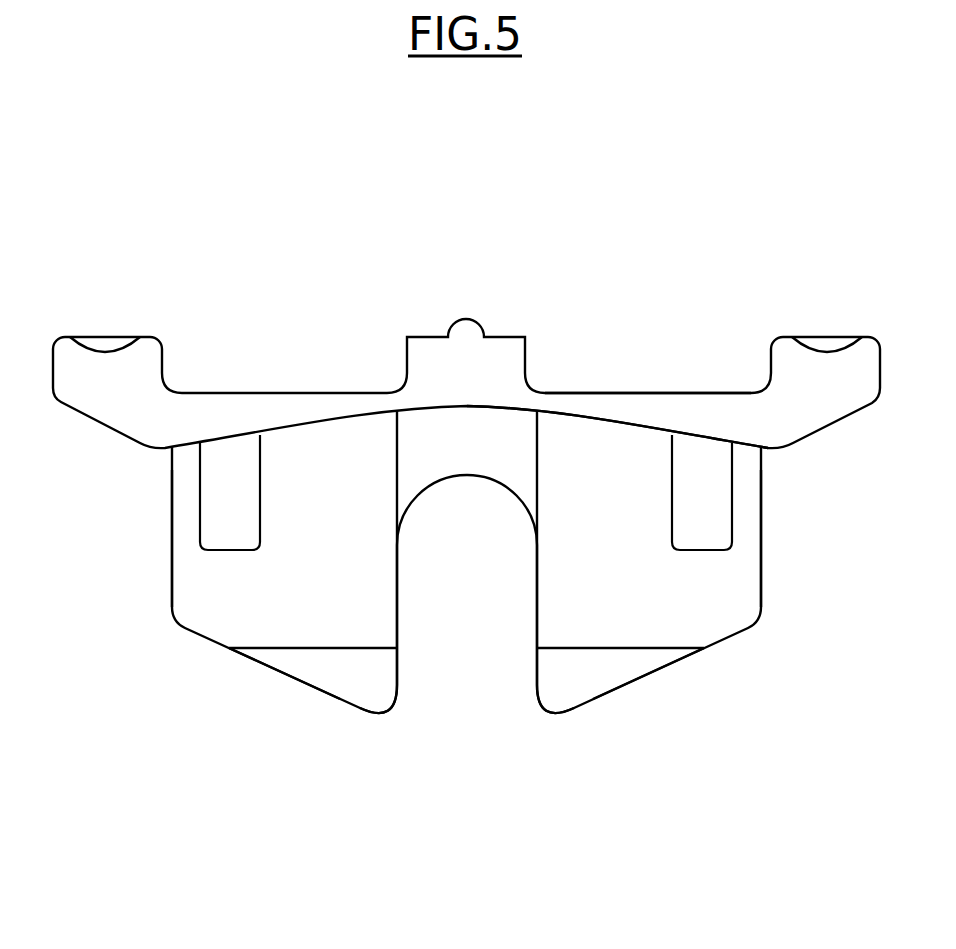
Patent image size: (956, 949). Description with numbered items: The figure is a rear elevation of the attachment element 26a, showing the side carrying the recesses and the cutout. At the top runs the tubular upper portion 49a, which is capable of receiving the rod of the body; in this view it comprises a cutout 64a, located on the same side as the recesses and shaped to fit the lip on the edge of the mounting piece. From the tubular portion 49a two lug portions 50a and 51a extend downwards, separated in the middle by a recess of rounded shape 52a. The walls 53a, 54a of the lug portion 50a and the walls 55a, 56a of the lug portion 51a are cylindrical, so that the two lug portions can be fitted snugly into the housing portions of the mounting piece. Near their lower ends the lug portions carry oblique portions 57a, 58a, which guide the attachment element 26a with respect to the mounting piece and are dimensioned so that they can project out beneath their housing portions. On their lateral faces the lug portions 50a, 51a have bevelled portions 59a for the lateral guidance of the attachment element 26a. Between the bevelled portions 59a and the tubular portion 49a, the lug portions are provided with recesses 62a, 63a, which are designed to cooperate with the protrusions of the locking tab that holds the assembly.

The attachment element 26a is at (211, 336).
The tubular upper portion 49a is at (643, 392).
The cutout 64a is at (590, 416).
The lug portion 50a is at (250, 596).
The lug portion 51a is at (670, 594).
The recess of rounded shape 52a is at (485, 478).
The wall 53a is at (172, 547).
The wall 56a is at (761, 545).
The wall 54a is at (397, 622).
The wall 55a is at (537, 622).
The oblique portion 57a is at (312, 688).
The oblique portion 58a is at (618, 690).
The bevelled portions 59a is at (378, 680).
The recess 62a is at (220, 487).
The recess 63a is at (722, 483).